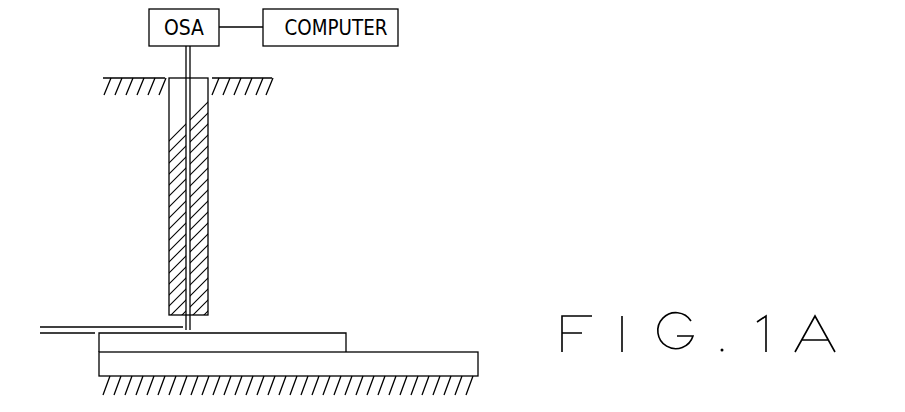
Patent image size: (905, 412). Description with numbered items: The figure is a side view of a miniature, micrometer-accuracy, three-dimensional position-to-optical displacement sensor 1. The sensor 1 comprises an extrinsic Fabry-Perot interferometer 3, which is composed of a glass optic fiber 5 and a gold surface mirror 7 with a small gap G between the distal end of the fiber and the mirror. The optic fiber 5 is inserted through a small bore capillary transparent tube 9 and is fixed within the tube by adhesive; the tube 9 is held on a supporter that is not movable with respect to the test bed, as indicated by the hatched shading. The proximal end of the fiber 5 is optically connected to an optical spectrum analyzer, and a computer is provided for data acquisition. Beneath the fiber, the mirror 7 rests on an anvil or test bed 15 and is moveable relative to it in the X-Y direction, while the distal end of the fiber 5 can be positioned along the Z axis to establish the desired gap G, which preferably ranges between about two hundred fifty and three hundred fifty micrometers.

The position-to-optical displacement sensor 1 is at (145, 252).
The extrinsic Fabry-Perot interferometer 3 is at (233, 298).
The glass optic fiber 5 is at (192, 60).
The gold surface mirror 7 is at (305, 332).
The small bore capillary transparent tube 9 is at (208, 177).
The test bed 15 is at (392, 352).
The gap G is at (52, 295).